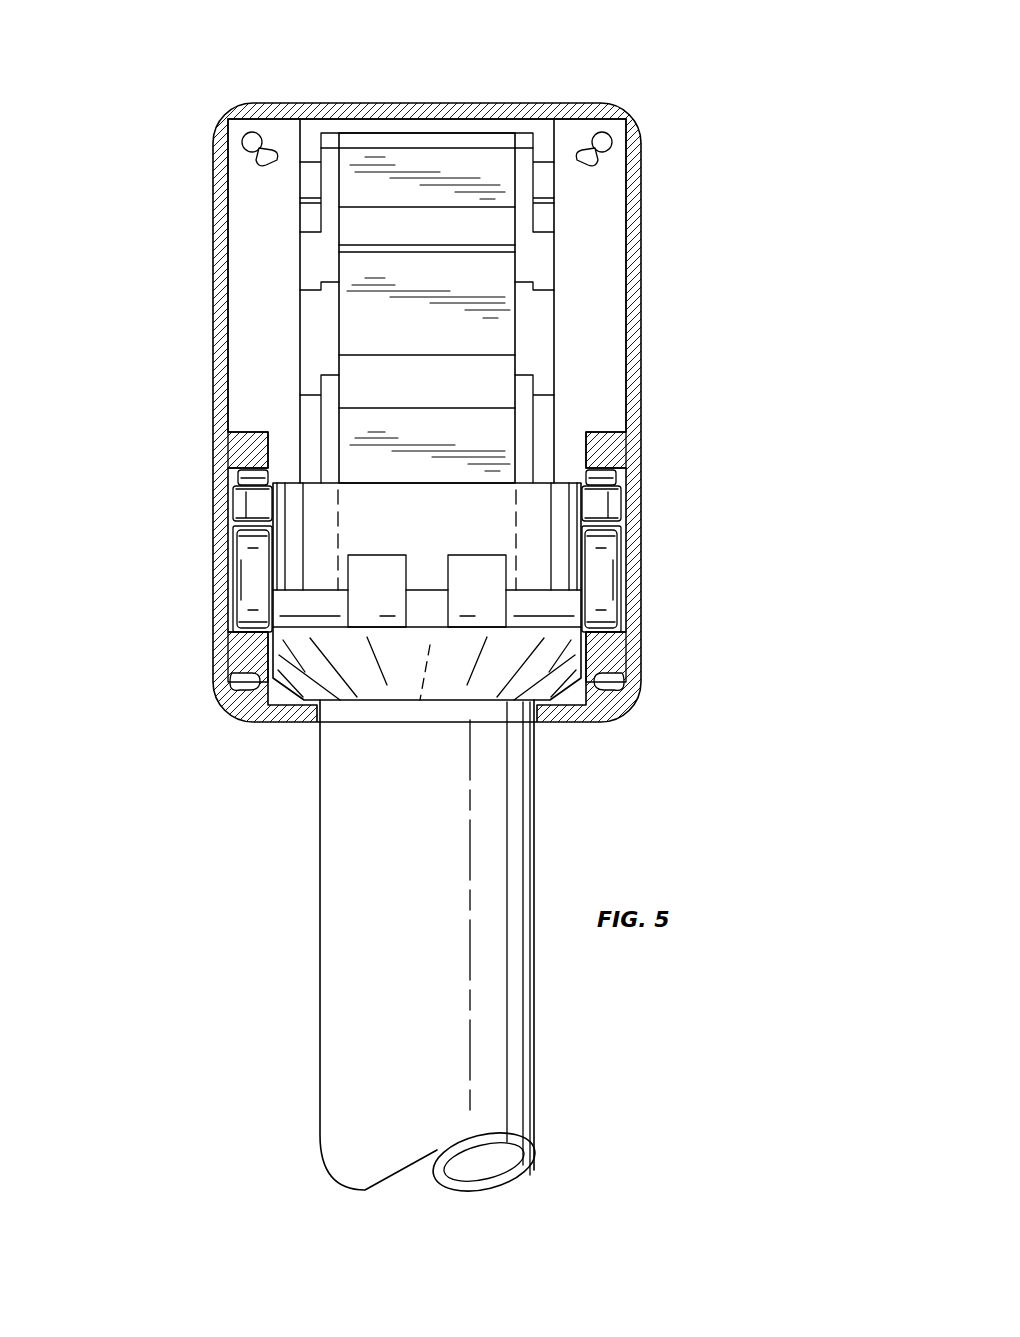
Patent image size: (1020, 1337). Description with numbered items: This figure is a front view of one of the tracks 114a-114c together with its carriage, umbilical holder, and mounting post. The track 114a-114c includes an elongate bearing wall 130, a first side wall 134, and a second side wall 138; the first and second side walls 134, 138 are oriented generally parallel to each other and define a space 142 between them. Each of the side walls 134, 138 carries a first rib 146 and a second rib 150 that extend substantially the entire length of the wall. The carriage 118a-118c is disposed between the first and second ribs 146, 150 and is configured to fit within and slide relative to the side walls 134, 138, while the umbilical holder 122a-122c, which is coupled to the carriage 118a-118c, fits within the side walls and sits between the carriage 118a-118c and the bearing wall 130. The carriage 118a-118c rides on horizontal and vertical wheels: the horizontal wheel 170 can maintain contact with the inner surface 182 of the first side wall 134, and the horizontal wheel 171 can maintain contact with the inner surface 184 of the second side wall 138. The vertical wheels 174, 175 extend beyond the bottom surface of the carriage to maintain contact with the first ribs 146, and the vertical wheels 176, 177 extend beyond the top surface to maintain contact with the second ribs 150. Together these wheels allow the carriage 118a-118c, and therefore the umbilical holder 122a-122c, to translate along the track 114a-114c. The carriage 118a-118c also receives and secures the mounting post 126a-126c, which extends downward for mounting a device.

The tracks 114a-114c is at (641, 133).
The bearing wall 130 is at (373, 118).
The first side wall 134 is at (216, 226).
The second side wall 138 is at (641, 230).
The space 142 is at (586, 303).
The umbilical holders 122a-122c is at (488, 160).
The second rib 150 is at (256, 450).
The vertical wheel 176 is at (241, 477).
The vertical wheel 177 is at (613, 477).
The horizontal wheel 170 is at (246, 501).
The horizontal wheel 171 is at (608, 501).
The inner surface of the first side wall 182 is at (241, 546).
The inner surface of the second side wall 184 is at (613, 546).
The vertical wheel 174 is at (246, 581).
The vertical wheel 175 is at (608, 581).
The first rib 146 is at (252, 651).
The carriages 118a-118c is at (528, 660).
The mounting posts 126a-126c is at (356, 905).